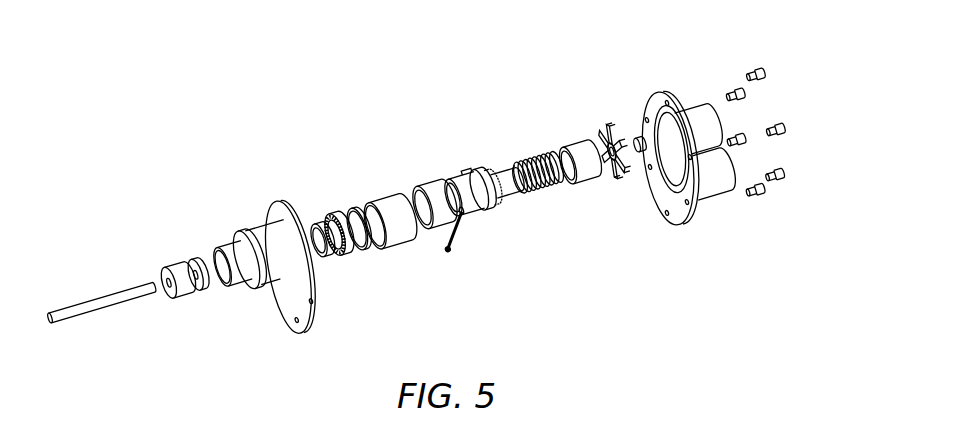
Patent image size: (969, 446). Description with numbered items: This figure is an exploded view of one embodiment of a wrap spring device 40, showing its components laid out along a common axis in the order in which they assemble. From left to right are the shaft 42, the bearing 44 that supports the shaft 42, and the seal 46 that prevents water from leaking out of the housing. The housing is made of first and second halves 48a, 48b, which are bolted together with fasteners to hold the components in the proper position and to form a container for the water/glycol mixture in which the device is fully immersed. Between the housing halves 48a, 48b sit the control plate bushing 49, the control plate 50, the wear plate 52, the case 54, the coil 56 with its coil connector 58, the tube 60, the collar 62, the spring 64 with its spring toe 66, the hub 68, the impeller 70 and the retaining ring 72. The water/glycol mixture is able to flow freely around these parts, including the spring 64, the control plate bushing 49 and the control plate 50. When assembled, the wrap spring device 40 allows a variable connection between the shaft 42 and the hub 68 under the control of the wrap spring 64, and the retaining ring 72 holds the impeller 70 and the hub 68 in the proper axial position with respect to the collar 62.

The wrap spring device 40 is at (772, 151).
The shaft 42 is at (118, 297).
The bearing 44 is at (177, 270).
The seal 46 is at (203, 255).
The first housing half 48a is at (263, 237).
The second housing half 48b is at (700, 117).
The control plate bushing 49 is at (318, 230).
The control plate 50 is at (343, 220).
The wear plate 52 is at (357, 207).
The case 54 is at (398, 233).
The coil 56 is at (430, 193).
The coil connector 58 is at (457, 232).
The tube 60 is at (470, 187).
The collar 62 is at (500, 170).
The spring 64 is at (542, 160).
The spring toe 66 is at (523, 168).
The hub 68 is at (575, 152).
The impeller 70 is at (617, 182).
The retaining ring 72 is at (640, 137).